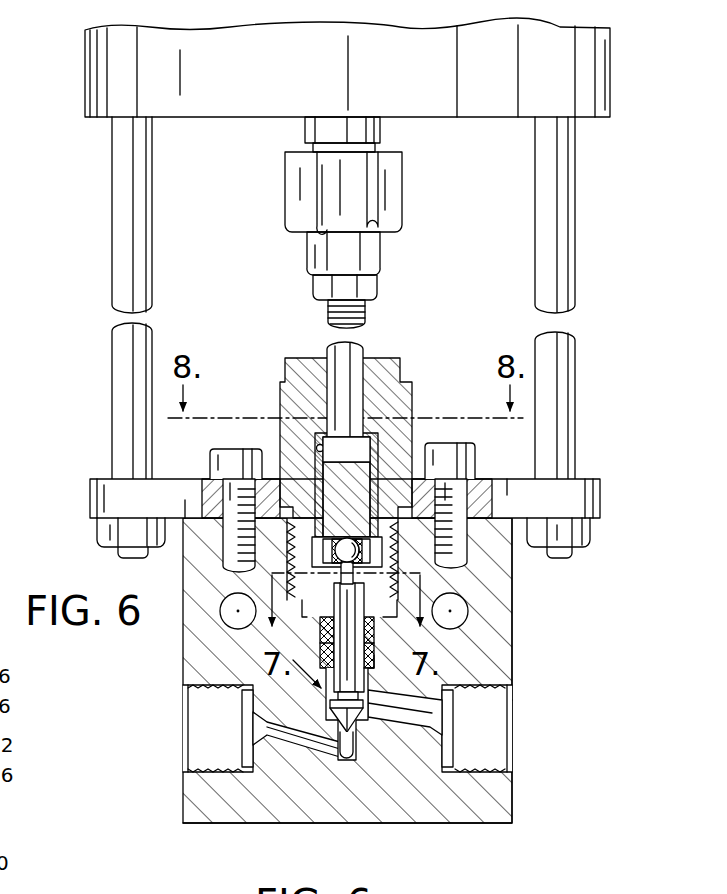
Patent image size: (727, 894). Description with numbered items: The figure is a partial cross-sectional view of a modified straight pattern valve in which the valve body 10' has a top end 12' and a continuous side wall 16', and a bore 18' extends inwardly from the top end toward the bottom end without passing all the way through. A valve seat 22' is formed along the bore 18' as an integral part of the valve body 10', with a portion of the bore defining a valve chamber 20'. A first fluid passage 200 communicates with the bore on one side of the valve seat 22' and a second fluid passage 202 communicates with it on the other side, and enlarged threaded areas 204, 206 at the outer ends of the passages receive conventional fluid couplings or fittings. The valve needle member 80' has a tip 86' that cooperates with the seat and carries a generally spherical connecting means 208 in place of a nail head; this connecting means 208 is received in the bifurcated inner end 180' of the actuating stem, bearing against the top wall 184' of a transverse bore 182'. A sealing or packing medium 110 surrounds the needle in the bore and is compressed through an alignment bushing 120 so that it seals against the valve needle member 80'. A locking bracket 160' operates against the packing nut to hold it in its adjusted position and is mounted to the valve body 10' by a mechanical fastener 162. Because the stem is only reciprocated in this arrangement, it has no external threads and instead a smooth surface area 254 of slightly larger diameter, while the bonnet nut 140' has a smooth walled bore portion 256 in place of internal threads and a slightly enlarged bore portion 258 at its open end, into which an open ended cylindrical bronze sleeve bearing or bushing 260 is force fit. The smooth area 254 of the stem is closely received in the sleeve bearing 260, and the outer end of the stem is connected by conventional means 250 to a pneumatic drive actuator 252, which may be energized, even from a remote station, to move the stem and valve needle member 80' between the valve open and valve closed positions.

The pneumatic drive valve or actuator 252 is at (78, 69).
The conventional means 250 is at (367, 257).
The bonnet nut 140' is at (383, 438).
The locking bracket 160' is at (345, 452).
The smooth surface area 254 is at (365, 452).
The mechanical fastener 162 is at (470, 458).
The smooth walled bore portion 256 is at (349, 539).
The sleeve bearing or bushing 260 is at (339, 567).
The bifurcated inner end 180' is at (295, 479).
The top wall 184' is at (347, 499).
The top end 12' is at (200, 533).
The spherical connecting means 208 is at (300, 519).
The transverse bore 182' is at (456, 563).
The enlarged bore portion 258 is at (392, 566).
The continuous side wall 16' is at (537, 609).
The valve body 10' is at (315, 670).
The bore 18' is at (243, 714).
The tip 86' is at (222, 728).
The enlarged threaded area 204 is at (207, 766).
The enlarged threaded area 206 is at (482, 767).
The valve chamber 20' is at (507, 728).
The valve needle member 80' is at (468, 674).
The sealing or packing medium 110 is at (312, 645).
The alignment bushing 120 is at (377, 603).
The first fluid passage 200 is at (290, 744).
The valve seat 22' is at (332, 780).
The second fluid passage 202 is at (405, 735).